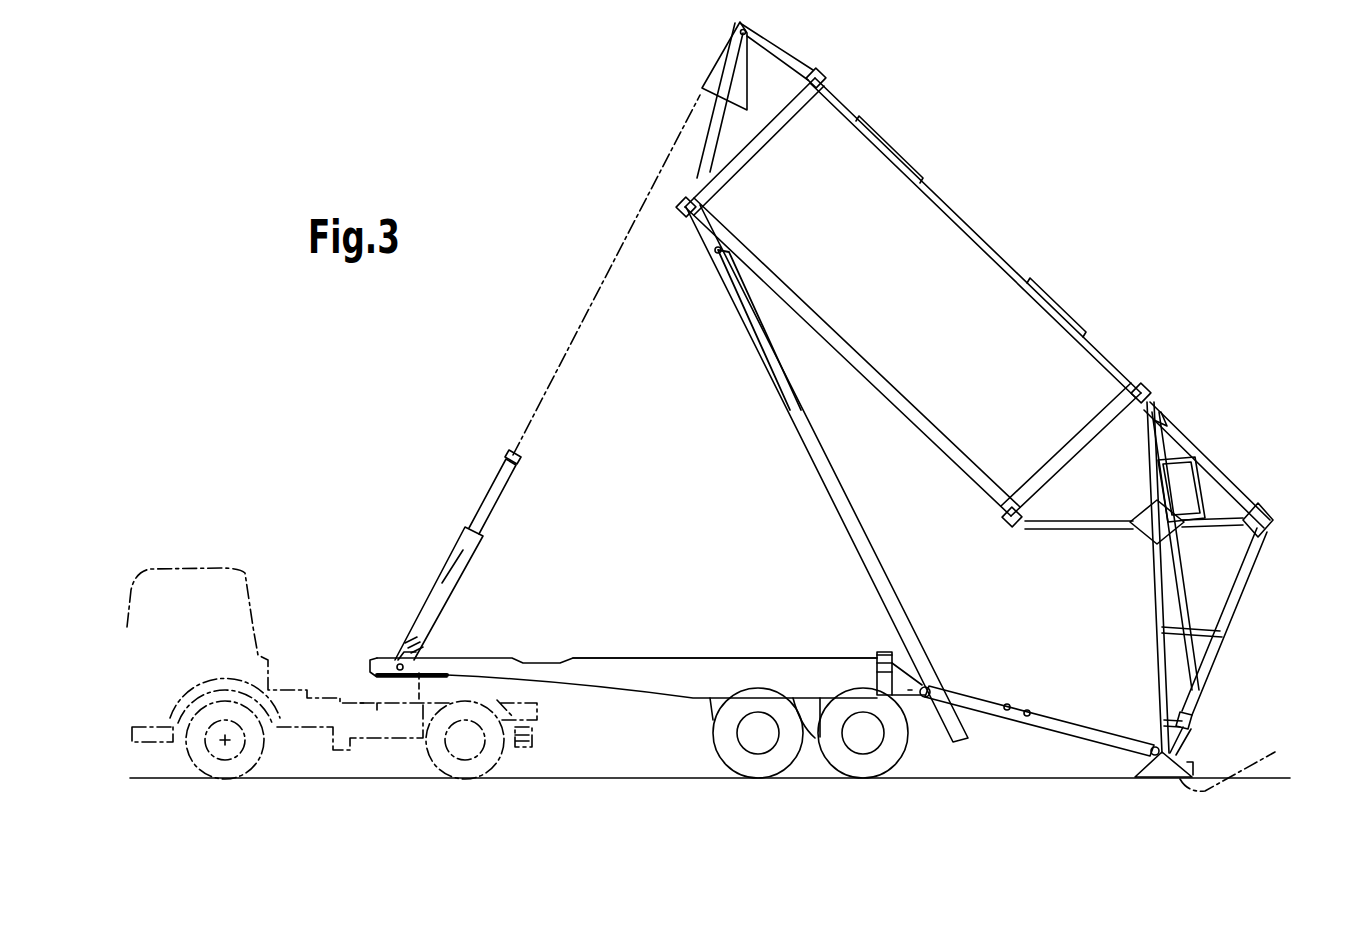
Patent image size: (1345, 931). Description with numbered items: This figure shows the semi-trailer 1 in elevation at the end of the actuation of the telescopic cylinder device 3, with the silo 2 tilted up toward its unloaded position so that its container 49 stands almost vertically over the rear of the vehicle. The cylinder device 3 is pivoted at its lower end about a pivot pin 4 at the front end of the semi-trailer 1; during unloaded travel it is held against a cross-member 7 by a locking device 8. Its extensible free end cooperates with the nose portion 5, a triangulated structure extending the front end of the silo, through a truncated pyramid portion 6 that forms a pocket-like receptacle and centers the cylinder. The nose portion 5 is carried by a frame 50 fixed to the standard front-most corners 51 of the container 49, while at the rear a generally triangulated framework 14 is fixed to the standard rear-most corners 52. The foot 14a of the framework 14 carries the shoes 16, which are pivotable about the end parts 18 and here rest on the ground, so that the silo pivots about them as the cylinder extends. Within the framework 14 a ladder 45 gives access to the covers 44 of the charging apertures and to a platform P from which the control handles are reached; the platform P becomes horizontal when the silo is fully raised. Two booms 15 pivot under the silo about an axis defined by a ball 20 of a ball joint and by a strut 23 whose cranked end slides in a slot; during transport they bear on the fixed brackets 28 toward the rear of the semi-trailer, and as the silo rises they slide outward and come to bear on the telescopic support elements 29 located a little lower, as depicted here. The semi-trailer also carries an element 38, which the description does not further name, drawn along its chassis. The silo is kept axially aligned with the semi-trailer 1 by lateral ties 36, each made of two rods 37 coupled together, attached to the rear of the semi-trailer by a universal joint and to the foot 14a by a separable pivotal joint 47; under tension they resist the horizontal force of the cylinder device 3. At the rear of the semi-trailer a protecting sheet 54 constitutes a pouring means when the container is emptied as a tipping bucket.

The semi-trailer 1 is at (652, 682).
The silo 2 is at (940, 228).
The telescopic cylinder device 3 is at (430, 604).
The pivot pin 4 is at (397, 670).
The nose portion 5 is at (750, 30).
The truncated pyramid portion 6 is at (748, 80).
The cross-member 7 is at (430, 655).
The locking device 8 is at (425, 633).
The framework 14 is at (1230, 615).
The foot of the framework 14a is at (1185, 752).
The booms 15 is at (845, 494).
The shoes 16 is at (1242, 763).
The end parts 18 is at (1188, 734).
The ball 20 is at (715, 255).
The strut 23 is at (684, 242).
The brackets 28 is at (873, 667).
The telescopic support elements 29 is at (928, 688).
The lateral ties 36 is at (1022, 696).
The rods 37 is at (965, 683).
The frame top rail 38 is at (715, 668).
The covers 44 is at (897, 152).
The ladder 45 is at (1182, 580).
The pivotal joint 47 is at (1147, 758).
The container 49 is at (975, 265).
The frame 50 is at (790, 78).
The front-most corners 51 is at (826, 76).
The rear-most corners 52 is at (1152, 390).
The protecting sheet 54 is at (908, 690).
The platform P is at (1188, 520).